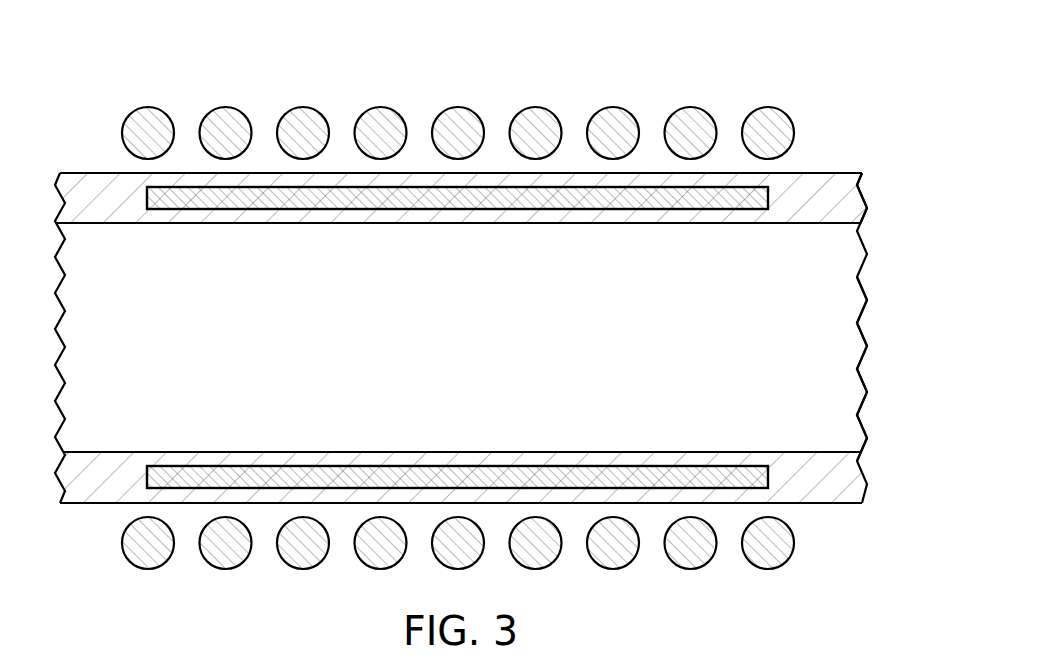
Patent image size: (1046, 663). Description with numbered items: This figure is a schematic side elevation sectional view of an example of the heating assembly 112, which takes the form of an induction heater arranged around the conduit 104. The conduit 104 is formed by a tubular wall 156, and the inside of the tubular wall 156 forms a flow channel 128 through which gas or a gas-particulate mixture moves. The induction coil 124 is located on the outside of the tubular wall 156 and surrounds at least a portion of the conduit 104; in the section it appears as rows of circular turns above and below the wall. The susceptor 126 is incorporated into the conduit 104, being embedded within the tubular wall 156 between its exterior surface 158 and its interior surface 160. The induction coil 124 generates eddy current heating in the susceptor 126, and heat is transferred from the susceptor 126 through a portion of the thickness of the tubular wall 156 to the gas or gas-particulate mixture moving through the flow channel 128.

The conduit 104 is at (482, 290).
The heating assembly 112 is at (856, 41).
The induction coil 124 is at (148, 107).
The susceptor 126 is at (770, 200).
The flow channel 128 is at (834, 401).
The tubular wall 156 is at (867, 200).
The exterior surface 158 is at (88, 172).
The interior surface 160 is at (132, 224).